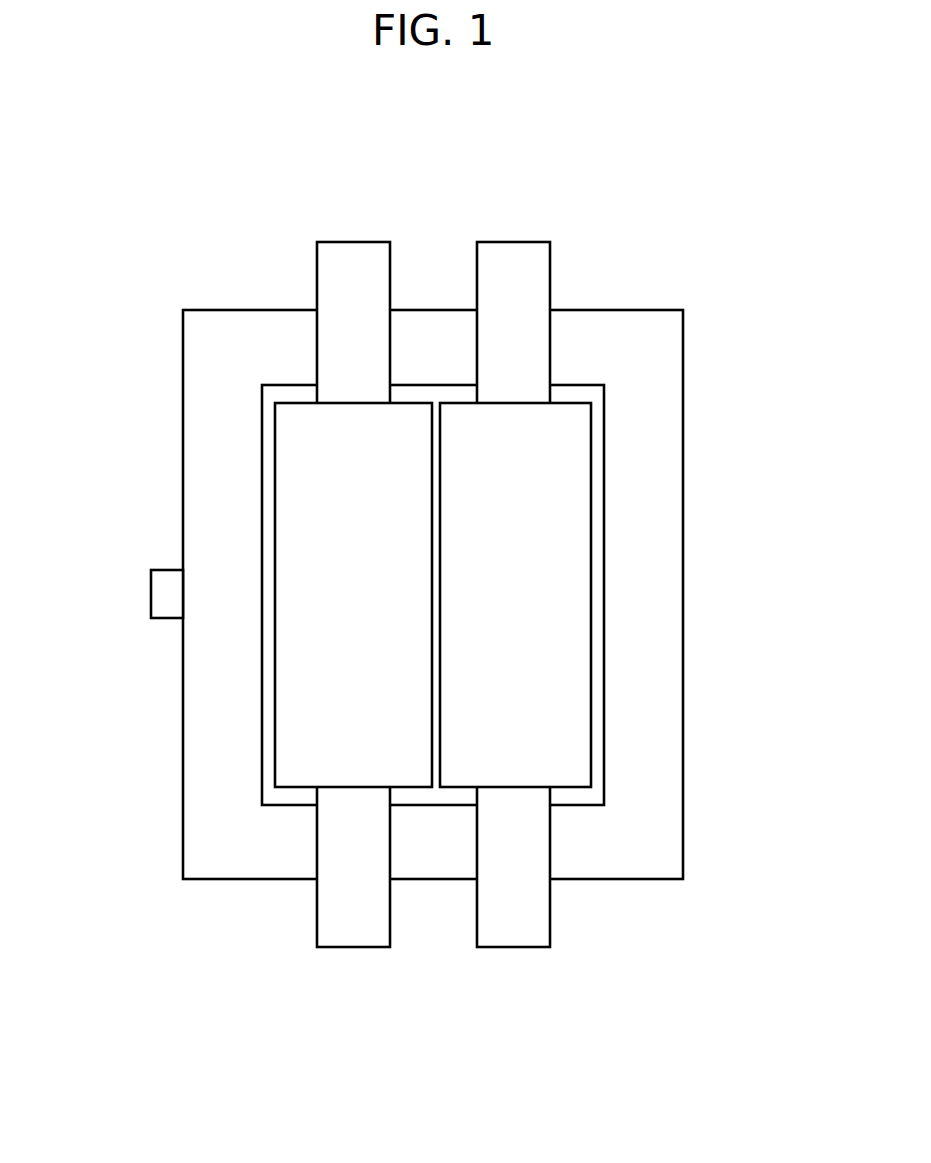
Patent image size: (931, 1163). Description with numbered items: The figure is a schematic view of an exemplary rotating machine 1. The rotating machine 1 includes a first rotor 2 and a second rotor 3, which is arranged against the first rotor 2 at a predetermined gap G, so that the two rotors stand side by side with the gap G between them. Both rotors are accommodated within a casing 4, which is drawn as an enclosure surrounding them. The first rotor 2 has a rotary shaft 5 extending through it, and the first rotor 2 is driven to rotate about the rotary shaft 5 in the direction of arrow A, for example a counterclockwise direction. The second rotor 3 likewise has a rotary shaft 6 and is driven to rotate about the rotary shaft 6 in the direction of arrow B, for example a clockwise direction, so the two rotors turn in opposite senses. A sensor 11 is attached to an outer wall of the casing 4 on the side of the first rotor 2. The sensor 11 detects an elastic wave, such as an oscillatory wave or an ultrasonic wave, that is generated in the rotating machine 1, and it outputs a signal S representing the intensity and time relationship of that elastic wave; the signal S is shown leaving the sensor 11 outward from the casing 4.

The rotating machine 1 is at (432, 538).
The first rotor 2 is at (305, 516).
The second rotor 3 is at (560, 632).
The casing 4 is at (655, 388).
The rotary shaft 5 is at (317, 274).
The rotary shaft 6 is at (551, 278).
The sensor 11 is at (163, 620).
The arrow A is at (405, 261).
The arrow B is at (573, 264).
The gap G is at (436, 396).
The signal S is at (151, 594).